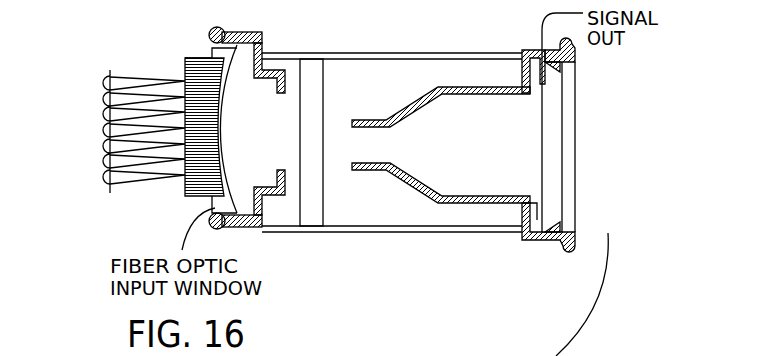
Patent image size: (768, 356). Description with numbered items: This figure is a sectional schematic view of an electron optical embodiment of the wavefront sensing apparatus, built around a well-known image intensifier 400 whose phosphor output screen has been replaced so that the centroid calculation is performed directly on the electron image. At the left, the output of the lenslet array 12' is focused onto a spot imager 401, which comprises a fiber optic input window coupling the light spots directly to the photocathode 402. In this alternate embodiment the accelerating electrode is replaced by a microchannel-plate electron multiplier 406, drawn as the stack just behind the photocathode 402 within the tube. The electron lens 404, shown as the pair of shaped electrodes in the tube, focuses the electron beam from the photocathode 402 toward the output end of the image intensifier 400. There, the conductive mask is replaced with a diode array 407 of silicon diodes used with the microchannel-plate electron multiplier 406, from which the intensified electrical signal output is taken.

The lenslet array 12' is at (97, 106).
The spot imager 401 is at (186, 68).
The photocathode 402 is at (223, 99).
The image intensifier 400 is at (318, 228).
The microchannel-plate electron multiplier 406 is at (323, 200).
The electron lens 404 is at (400, 180).
The diode array 407 is at (545, 173).